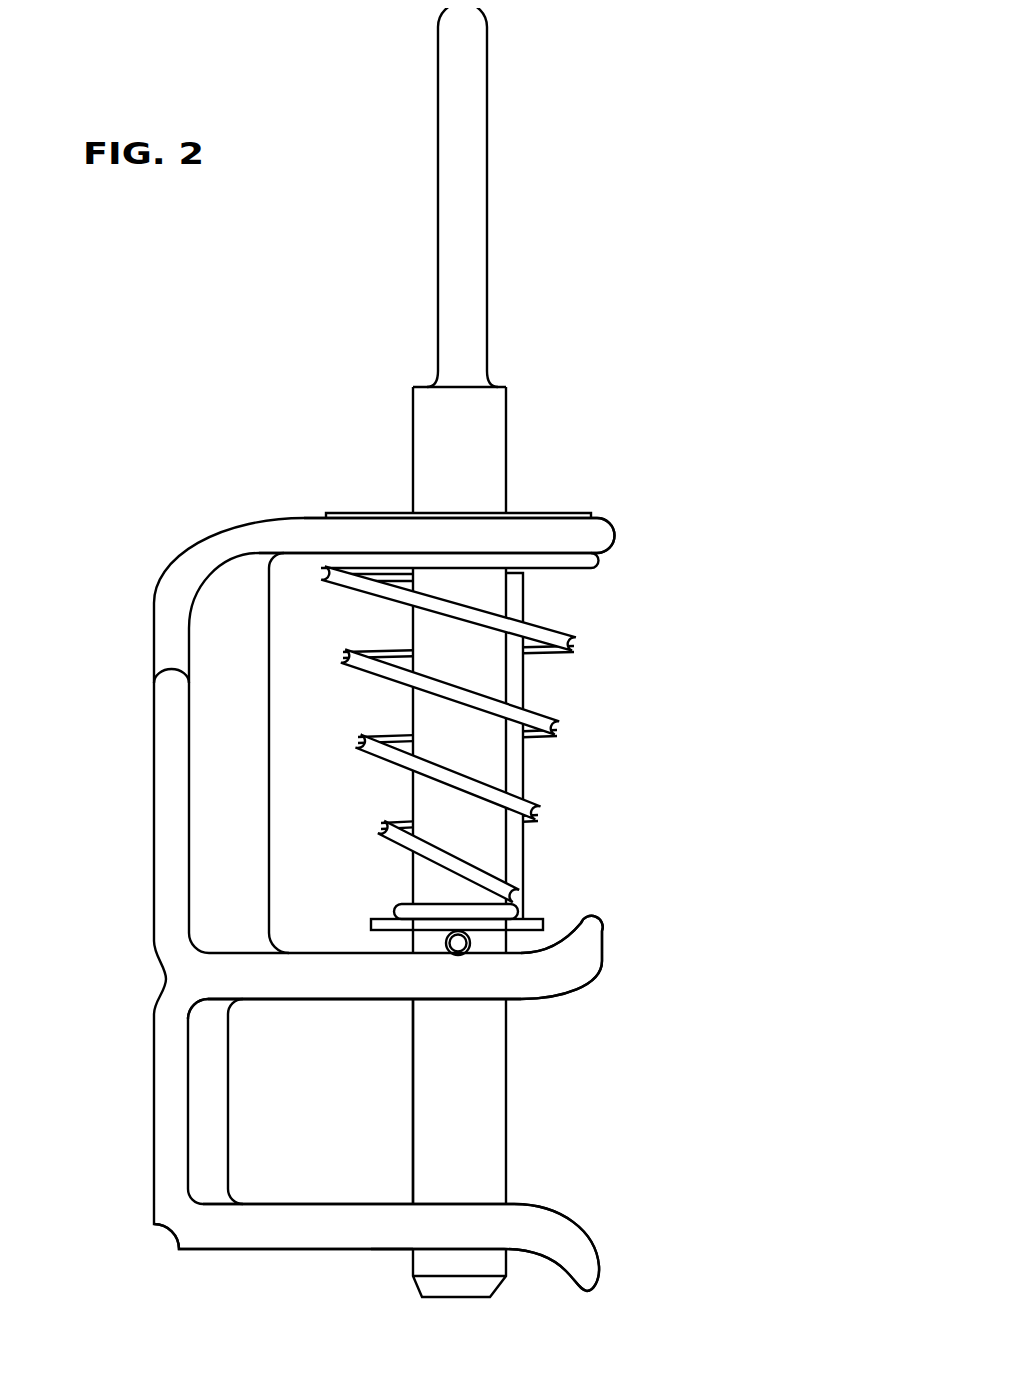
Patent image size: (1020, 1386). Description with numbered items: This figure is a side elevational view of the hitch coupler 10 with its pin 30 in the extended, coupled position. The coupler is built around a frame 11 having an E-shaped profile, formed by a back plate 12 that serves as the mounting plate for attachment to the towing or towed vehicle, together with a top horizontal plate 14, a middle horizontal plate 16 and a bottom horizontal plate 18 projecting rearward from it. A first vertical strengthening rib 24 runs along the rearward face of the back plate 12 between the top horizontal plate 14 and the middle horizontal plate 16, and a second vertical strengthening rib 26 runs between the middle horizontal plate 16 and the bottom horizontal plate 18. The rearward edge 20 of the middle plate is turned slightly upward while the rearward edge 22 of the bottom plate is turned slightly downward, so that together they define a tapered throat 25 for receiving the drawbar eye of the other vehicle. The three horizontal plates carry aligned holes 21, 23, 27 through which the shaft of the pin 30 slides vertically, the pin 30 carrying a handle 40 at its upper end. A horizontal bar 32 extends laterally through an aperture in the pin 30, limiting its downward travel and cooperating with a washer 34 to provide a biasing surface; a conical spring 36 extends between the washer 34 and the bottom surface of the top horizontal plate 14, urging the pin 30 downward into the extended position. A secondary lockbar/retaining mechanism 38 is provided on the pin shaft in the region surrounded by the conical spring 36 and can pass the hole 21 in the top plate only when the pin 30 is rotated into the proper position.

The hitch coupler 10 is at (146, 419).
The frame 11 is at (151, 896).
The back plate 12 is at (163, 727).
The top horizontal plate 14 is at (305, 520).
The middle horizontal plate 16 is at (281, 993).
The bottom horizontal plate 18 is at (240, 1232).
The rearward edge of the middle plate 20 is at (593, 943).
The hole 21 is at (408, 512).
The rearward edge of the bottom plate 22 is at (593, 1252).
The hole 23 is at (505, 1000).
The first vertical strengthening rib 24 is at (195, 805).
The tapered throat 25 is at (582, 1105).
The second vertical strengthening rib 26 is at (197, 1142).
The hole 27 is at (395, 1250).
The pin 30 is at (494, 420).
The horizontal bar 32 is at (457, 930).
The washer 34 is at (377, 915).
The conical spring 36 is at (536, 813).
The secondary lockbar/retaining mechanism 38 is at (520, 667).
The handle 40 is at (475, 162).